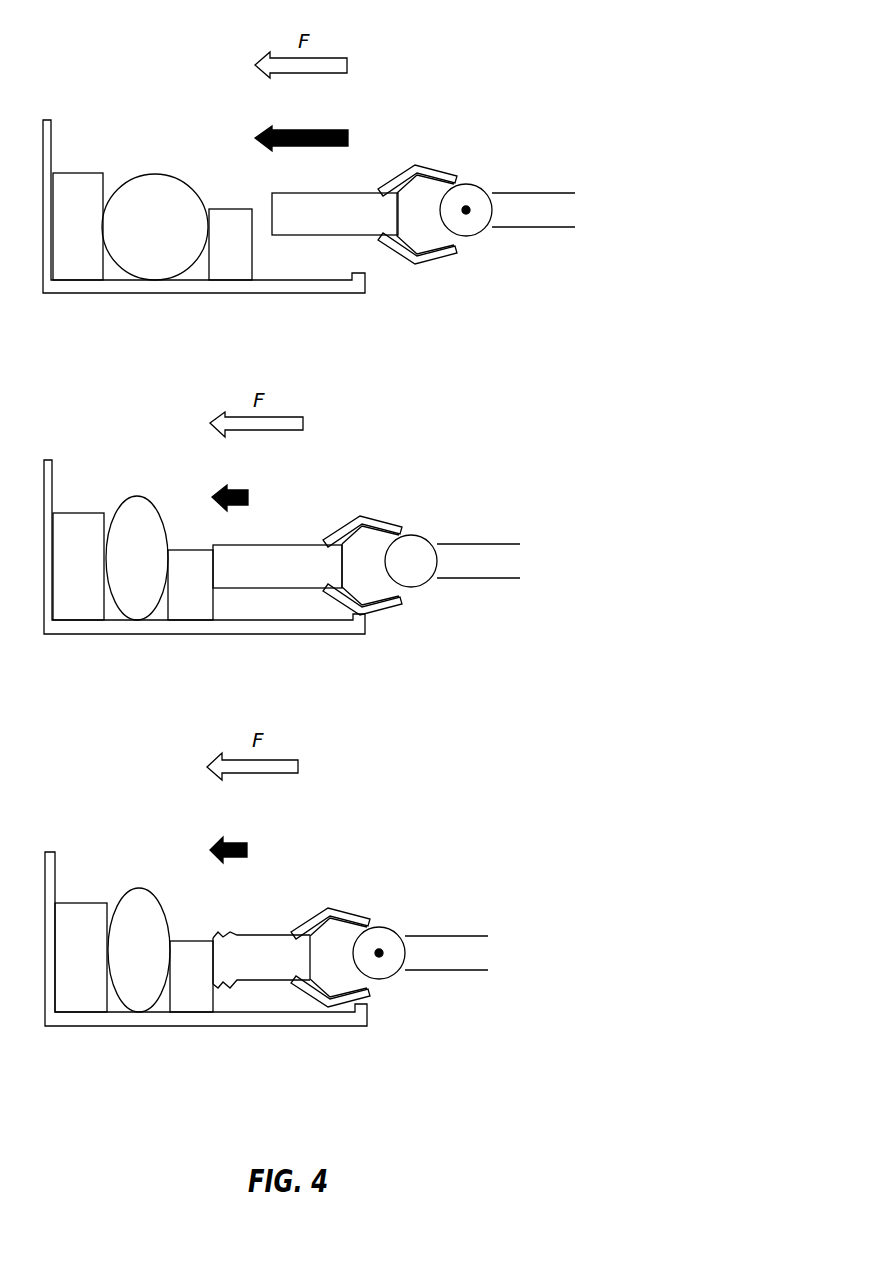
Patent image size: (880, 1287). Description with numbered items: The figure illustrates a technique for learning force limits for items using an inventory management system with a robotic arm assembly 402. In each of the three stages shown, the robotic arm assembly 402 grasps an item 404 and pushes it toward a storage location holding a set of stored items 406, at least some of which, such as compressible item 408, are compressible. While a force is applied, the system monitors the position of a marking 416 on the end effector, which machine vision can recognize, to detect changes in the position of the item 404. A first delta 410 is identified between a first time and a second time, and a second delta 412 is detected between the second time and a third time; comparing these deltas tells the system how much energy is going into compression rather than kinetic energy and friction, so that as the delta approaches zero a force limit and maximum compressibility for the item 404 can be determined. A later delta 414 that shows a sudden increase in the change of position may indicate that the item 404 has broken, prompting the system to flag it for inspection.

The robotic arm assembly 402 is at (485, 187).
The item 404 is at (360, 192).
The set of stored items 406 is at (242, 148).
The compressible item 408 is at (133, 500).
The first delta 410 is at (301, 129).
The second delta 412 is at (240, 486).
The delta 414 is at (232, 840).
The marking 416 is at (466, 214).